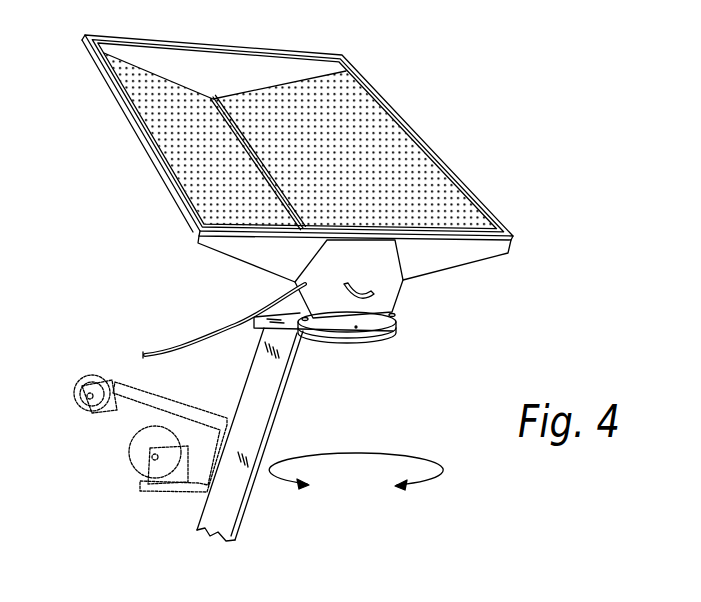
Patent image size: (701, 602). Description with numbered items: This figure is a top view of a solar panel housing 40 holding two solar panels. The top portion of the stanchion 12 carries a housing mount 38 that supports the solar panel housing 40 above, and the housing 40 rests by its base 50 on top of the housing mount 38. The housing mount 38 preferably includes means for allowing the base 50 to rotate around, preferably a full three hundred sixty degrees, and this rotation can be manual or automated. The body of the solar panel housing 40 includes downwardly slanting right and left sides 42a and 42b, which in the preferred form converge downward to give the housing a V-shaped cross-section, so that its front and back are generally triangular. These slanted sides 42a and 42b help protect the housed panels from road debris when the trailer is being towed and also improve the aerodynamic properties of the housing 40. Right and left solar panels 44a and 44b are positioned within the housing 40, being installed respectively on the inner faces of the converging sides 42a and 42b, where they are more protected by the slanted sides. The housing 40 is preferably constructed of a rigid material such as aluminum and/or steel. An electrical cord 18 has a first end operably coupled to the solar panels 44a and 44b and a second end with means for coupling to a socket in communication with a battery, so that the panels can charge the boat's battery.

The stanchion 12 is at (282, 404).
The electrical cord 18 is at (156, 355).
The housing mount 38 is at (320, 346).
The solar panel housing 40 is at (147, 197).
The right side 42a is at (228, 257).
The left side 42b is at (478, 263).
The right solar panel 44a is at (152, 114).
The left solar panel 44b is at (402, 152).
The base 50 is at (395, 316).